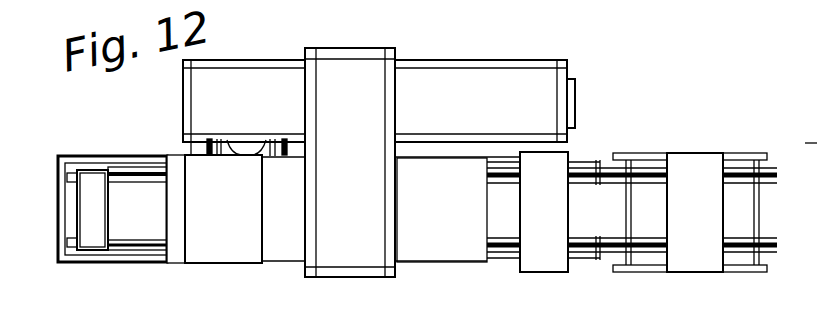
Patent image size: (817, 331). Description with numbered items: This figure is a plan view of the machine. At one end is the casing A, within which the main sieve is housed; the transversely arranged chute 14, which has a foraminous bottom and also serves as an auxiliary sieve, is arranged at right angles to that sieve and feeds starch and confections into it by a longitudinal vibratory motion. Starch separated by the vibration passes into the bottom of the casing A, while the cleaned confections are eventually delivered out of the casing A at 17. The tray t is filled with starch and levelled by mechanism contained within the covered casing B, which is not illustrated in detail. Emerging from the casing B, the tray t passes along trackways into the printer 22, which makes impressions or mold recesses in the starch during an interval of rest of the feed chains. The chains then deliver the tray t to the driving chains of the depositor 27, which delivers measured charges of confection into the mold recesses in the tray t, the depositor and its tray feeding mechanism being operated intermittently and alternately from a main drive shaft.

The chute 14 is at (243, 141).
The delivery outlet 17 is at (577, 104).
The printer 22 is at (544, 212).
The depositor 27 is at (690, 212).
The casing A is at (461, 88).
The covered casing B is at (285, 232).
The tray t is at (92, 232).